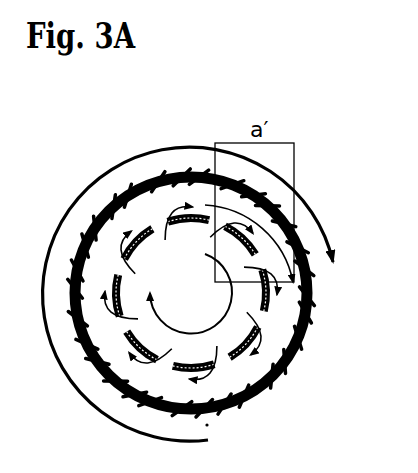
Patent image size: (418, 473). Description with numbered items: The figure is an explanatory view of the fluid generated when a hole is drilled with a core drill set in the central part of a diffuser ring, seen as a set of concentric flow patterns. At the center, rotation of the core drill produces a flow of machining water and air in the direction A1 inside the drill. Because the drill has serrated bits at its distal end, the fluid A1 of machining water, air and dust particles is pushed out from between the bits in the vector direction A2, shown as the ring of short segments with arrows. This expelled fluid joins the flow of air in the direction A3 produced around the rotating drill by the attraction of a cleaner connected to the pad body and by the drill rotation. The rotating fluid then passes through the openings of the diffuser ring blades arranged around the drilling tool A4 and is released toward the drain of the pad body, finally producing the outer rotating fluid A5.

The fluid flow in the core drill A1 is at (191, 294).
The vector direction of fluid pushed out from between the bits A2 is at (182, 293).
The rotating fluid around the core drill A3 is at (275, 226).
The release of fluid from the diffuser ring blade openings A4 is at (224, 293).
The rotating fluid A5 is at (217, 294).